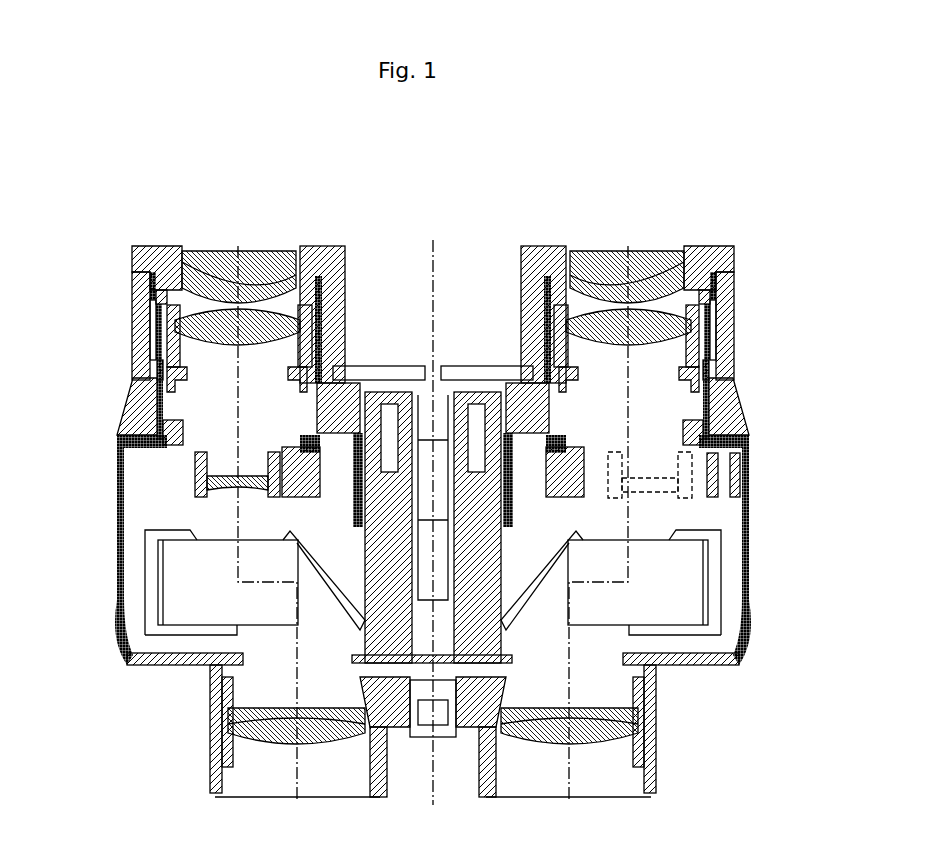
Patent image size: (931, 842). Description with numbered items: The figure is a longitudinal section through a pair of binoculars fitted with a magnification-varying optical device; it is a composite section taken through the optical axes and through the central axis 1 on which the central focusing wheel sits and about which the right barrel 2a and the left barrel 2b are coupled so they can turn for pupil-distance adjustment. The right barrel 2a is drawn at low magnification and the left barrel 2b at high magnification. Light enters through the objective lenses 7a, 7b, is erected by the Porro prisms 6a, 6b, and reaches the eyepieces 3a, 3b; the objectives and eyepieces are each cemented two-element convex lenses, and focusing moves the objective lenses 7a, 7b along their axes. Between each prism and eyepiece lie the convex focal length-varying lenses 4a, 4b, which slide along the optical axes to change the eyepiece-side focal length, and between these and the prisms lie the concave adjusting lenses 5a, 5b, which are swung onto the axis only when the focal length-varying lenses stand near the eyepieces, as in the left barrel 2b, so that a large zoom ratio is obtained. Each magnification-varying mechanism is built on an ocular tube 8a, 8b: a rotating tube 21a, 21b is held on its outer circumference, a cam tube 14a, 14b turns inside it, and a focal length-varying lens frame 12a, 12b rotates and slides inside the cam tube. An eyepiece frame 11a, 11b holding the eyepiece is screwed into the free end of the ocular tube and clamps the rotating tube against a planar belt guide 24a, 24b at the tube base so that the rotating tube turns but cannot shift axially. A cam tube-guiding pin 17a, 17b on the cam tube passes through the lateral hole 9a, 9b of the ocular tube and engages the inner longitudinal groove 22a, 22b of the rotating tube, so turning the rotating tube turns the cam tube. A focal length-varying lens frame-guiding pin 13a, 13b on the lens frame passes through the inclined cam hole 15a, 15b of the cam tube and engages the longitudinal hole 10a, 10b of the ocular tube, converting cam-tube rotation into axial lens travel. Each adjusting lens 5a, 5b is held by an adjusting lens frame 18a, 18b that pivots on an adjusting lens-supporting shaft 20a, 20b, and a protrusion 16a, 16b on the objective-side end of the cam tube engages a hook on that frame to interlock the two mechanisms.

The central axis 1 is at (427, 240).
The right barrel 2a is at (675, 185).
The left barrel 2b is at (192, 198).
The eyepiece 3a is at (605, 248).
The eyepiece 3b is at (257, 253).
The focal length-varying lens 4a is at (720, 378).
The focal length-varying lens 4b is at (262, 317).
The adjusting lens 5a is at (655, 490).
The adjusting lens 5b is at (207, 485).
The prism 6a is at (683, 590).
The prism 6b is at (182, 590).
The objective lens 7a is at (653, 753).
The objective lens 7b is at (233, 745).
The ocular tube 8a is at (717, 418).
The ocular tube 8b is at (325, 338).
The lateral hole 9a is at (535, 282).
The lateral hole 9b is at (150, 287).
The longitudinal hole 10a is at (543, 343).
The longitudinal hole 10b is at (158, 370).
The eyepiece frame 11a is at (708, 248).
The eyepiece frame 11b is at (155, 248).
The focal length-varying lens frame 12a is at (738, 345).
The focal length-varying lens frame 12b is at (347, 303).
The focal length-varying lens frame-guiding pin 13a is at (520, 378).
The focal length-varying lens frame-guiding pin 13b is at (152, 328).
The cam tube 14a is at (733, 323).
The cam tube 14b is at (143, 432).
The cam hole 15a is at (520, 363).
The cam hole 15b is at (157, 342).
The protrusion 16a is at (567, 478).
The protrusion 16b is at (273, 463).
The cam tube-guiding pin 17a is at (535, 300).
The cam tube-guiding pin 17b is at (158, 300).
The adjusting lens frame 18a is at (747, 473).
The adjusting lens frame 18b is at (195, 460).
The adjusting lens-supporting shaft 20a is at (705, 432).
The adjusting lens-supporting shaft 20b is at (310, 503).
The rotating tube 21a is at (738, 302).
The rotating tube 21b is at (338, 287).
The inner longitudinal groove 22a is at (518, 250).
The inner longitudinal groove 22b is at (151, 272).
The planar belt guide 24a is at (740, 405).
The planar belt guide 24b is at (147, 417).